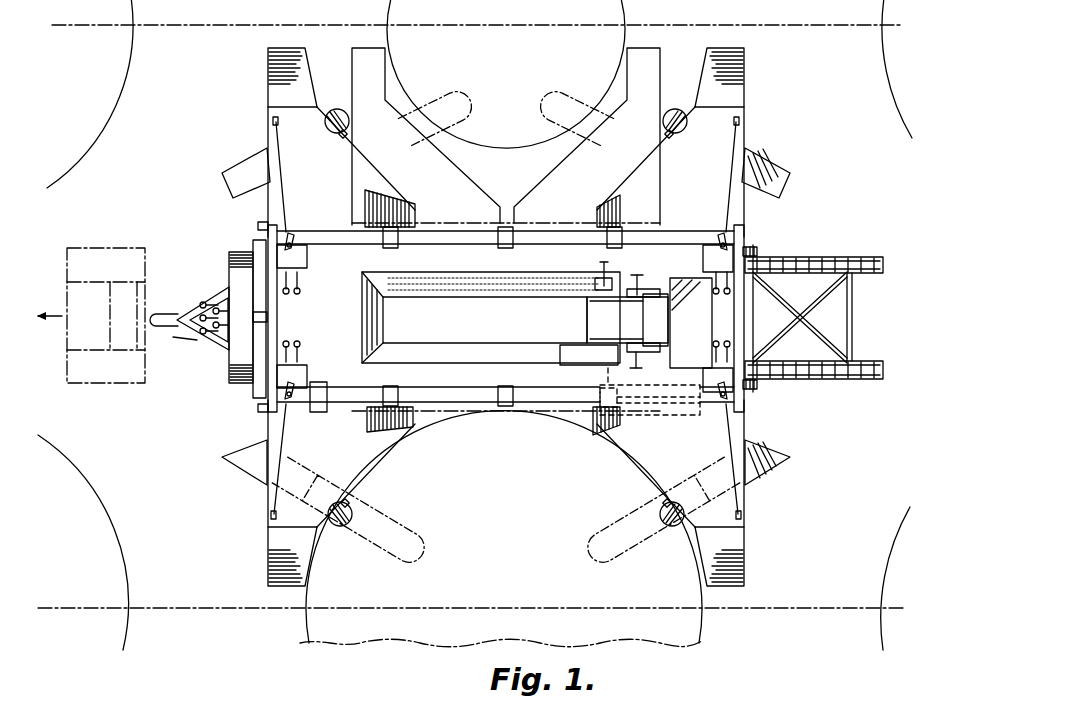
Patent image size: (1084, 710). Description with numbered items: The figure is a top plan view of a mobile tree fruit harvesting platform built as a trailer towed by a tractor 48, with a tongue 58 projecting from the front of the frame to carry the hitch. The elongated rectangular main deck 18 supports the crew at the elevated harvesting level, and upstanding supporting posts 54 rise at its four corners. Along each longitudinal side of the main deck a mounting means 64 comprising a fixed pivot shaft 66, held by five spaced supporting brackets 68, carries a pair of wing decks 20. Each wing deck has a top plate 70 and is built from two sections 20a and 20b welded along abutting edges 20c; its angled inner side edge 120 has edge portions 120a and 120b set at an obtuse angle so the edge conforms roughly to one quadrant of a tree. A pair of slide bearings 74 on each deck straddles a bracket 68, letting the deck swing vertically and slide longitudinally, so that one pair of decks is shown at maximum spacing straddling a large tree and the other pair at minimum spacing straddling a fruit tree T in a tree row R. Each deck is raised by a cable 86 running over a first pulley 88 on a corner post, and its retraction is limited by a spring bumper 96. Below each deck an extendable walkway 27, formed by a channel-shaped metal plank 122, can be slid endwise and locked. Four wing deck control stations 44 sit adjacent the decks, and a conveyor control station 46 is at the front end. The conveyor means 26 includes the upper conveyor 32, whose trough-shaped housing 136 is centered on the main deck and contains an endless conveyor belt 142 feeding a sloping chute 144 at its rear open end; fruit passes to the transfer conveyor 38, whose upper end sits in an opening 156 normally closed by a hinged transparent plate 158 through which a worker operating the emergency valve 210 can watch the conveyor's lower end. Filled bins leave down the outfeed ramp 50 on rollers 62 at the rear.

The main deck 18 is at (506, 318).
The wing deck 20 is at (352, 62).
The wing deck section 20a is at (508, 328).
The wing deck section 20b is at (272, 58).
The abutting edges 20c is at (270, 110).
The conveyor means 26 is at (653, 237).
The extendable walkway 27 is at (234, 164).
The upper conveyor 32 is at (530, 356).
The transfer conveyor 38 is at (650, 332).
The wing deck control station 44 is at (303, 282).
The conveyor control station 46 is at (209, 278).
The tractor 48 is at (140, 385).
The outfeed ramp 50 is at (838, 256).
The supporting posts 54 is at (309, 258).
The tongue 58 is at (163, 317).
The rollers 62 is at (814, 311).
The mounting means 64 is at (327, 410).
The pivot shaft 66 is at (448, 231).
The supporting brackets 68 is at (388, 240).
The top plate 70 is at (267, 435).
The slide bearings 74 is at (400, 222).
The cable 86 is at (280, 197).
The first cable guide or pulley 88 is at (300, 238).
The spring bumper 96 is at (263, 222).
The longitudinal inner side edge 120 is at (650, 489).
The edge portion 120a is at (350, 135).
The edge portion 120b is at (315, 86).
The metal plank 122 is at (233, 182).
The conveyor housing 136 is at (507, 357).
The endless conveyor belt 142 is at (485, 320).
The chute 144 is at (600, 312).
The opening 156 is at (650, 297).
The transparent plate 158 is at (728, 315).
The emergency valve 210 is at (579, 269).
The tree row R is at (813, 610).
The fruit tree T is at (708, 622).